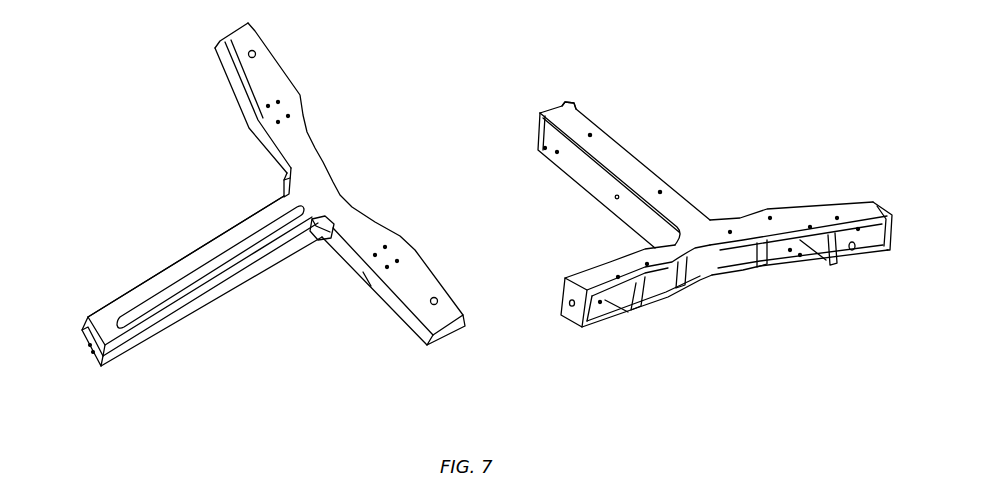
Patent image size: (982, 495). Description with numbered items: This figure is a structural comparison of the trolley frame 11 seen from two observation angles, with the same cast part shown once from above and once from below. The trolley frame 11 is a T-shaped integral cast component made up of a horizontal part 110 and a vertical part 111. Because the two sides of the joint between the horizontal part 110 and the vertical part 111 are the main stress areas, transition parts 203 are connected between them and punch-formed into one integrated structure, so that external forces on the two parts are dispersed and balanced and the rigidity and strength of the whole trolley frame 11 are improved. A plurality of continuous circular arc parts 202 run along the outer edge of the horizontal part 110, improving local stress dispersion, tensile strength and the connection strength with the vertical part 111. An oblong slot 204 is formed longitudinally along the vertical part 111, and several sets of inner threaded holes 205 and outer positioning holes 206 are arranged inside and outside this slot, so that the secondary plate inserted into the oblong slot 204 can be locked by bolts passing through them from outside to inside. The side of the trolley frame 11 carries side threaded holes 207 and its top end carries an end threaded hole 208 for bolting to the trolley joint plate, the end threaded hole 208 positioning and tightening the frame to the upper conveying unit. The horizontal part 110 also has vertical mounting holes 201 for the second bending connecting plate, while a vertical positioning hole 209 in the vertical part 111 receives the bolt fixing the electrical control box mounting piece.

The trolley frame 11 is at (290, 137).
The horizontal part 110 is at (272, 88).
The vertical part 111 is at (108, 322).
The transition parts 203 is at (283, 181).
The oblong slot 204 is at (136, 316).
The inner threaded holes 205 is at (207, 266).
The outer positioning holes 206 is at (222, 287).
The end threaded hole 208 is at (100, 362).
The side threaded holes 207 is at (540, 151).
The vertical positioning hole 209 is at (558, 110).
The vertical mounting holes 201 is at (613, 293).
The circular arc parts 202 is at (702, 283).